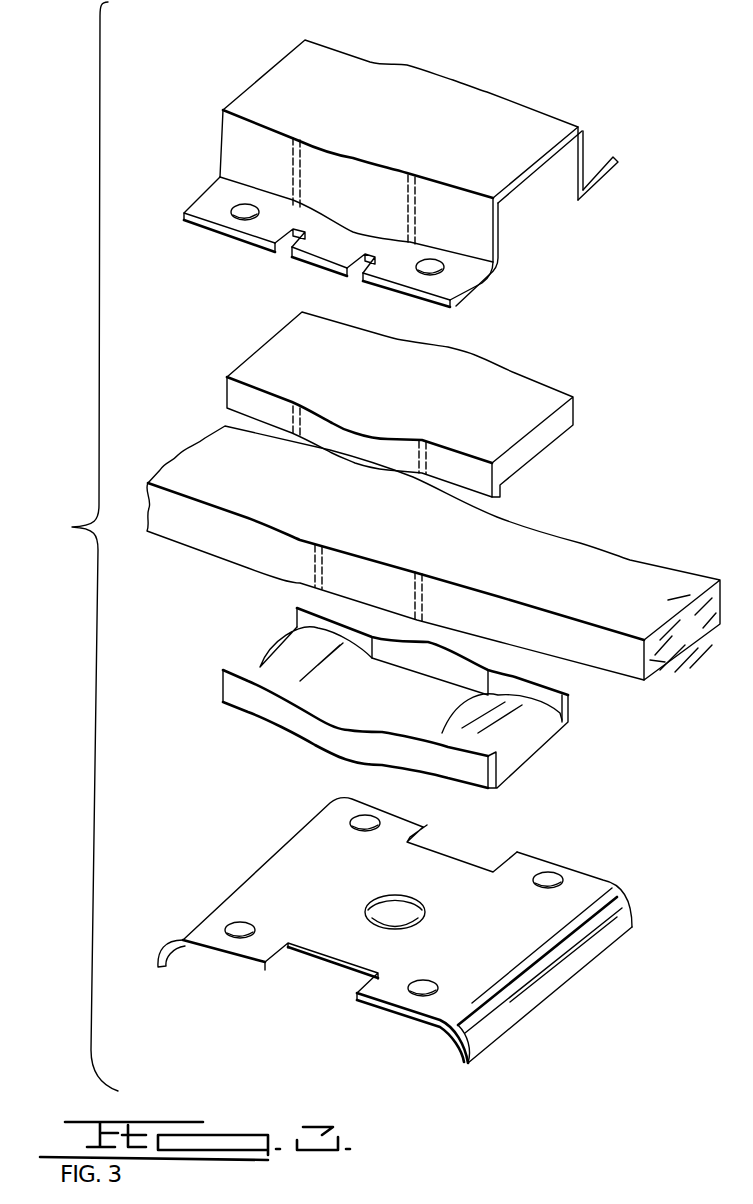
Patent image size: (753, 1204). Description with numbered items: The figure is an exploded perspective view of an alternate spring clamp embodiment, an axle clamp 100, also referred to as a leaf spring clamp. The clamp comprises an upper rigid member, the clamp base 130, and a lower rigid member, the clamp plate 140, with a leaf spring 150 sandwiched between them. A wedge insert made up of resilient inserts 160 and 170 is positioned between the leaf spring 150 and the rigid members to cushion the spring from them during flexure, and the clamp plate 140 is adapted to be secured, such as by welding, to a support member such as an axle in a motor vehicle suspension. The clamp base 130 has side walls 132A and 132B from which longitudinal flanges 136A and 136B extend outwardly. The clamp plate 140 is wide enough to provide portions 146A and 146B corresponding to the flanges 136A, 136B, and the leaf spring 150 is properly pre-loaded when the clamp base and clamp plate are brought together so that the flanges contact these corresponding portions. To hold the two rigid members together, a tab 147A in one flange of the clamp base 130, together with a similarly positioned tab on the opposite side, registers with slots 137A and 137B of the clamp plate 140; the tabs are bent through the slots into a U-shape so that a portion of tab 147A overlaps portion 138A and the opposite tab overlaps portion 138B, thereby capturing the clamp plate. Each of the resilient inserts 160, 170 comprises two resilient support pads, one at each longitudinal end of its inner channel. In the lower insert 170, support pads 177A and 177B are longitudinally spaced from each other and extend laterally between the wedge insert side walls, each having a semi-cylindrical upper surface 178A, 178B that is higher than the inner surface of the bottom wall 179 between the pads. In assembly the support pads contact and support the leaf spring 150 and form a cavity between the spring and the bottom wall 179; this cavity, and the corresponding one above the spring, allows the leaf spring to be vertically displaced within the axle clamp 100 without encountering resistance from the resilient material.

The axle clamp 100 is at (367, 546).
The clamp base 130 is at (390, 172).
The side wall 132A is at (397, 210).
The side wall 132B is at (561, 167).
The longitudinal flange 136A is at (290, 219).
The longitudinal flange 136B is at (597, 150).
The tab 147A is at (335, 252).
The resilient insert 160 is at (536, 373).
The leaf spring 150 is at (592, 541).
The resilient insert 170 is at (411, 688).
The support pad 177A is at (552, 742).
The support pad 177B is at (265, 633).
The semi-cylindrical upper surface 178A is at (510, 750).
The semi-cylindrical upper surface 178B is at (293, 640).
The bottom wall 179 is at (390, 704).
The clamp plate 140 is at (423, 919).
The portion 146A is at (388, 988).
The portion 146B is at (398, 828).
The slot 137A is at (278, 960).
The slot 137B is at (413, 835).
The portion 138A is at (338, 950).
The portion 138B is at (465, 870).